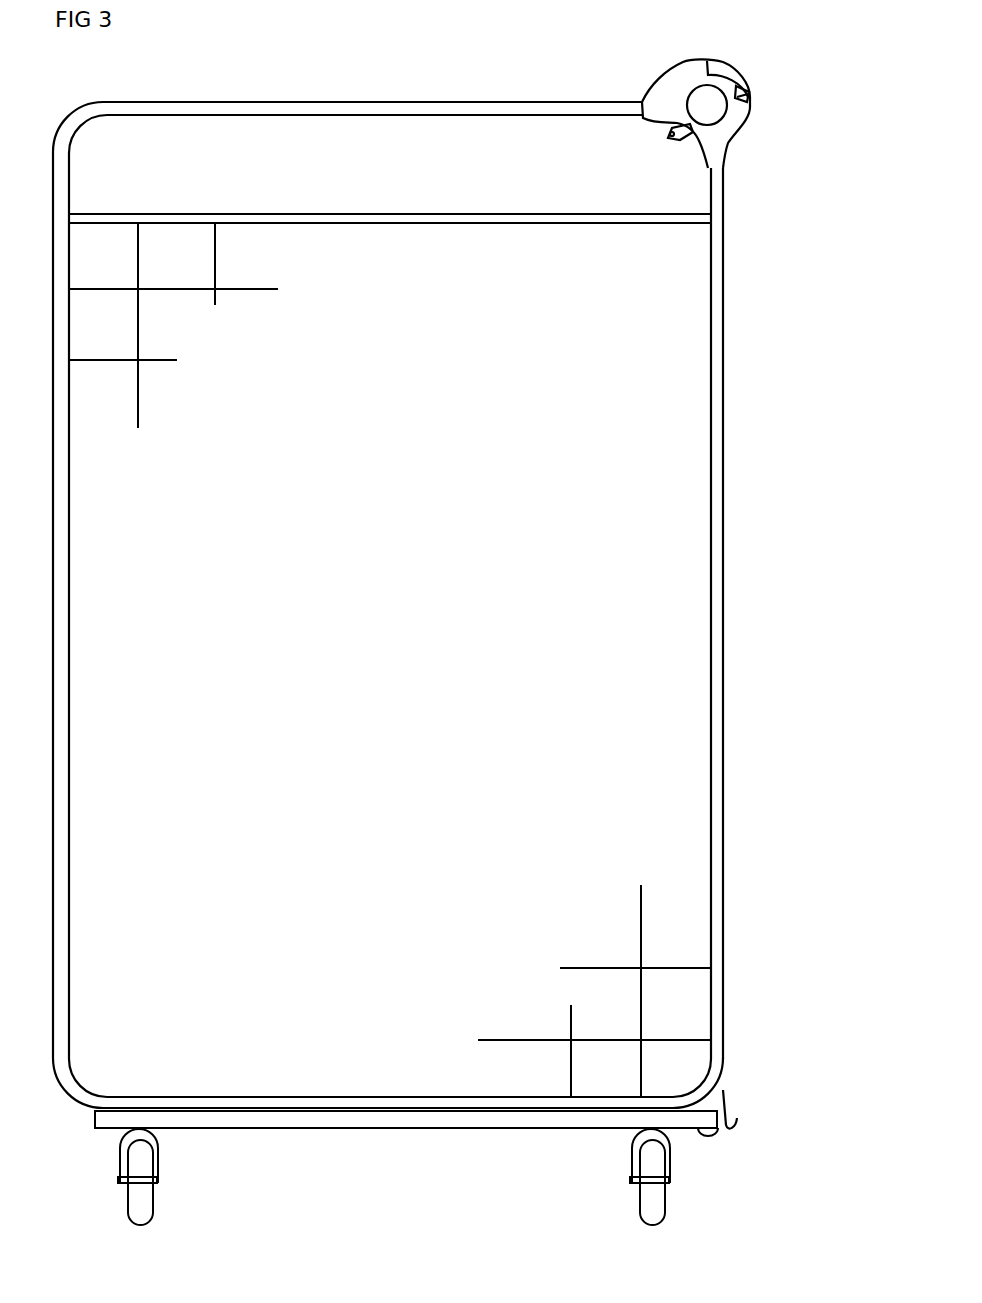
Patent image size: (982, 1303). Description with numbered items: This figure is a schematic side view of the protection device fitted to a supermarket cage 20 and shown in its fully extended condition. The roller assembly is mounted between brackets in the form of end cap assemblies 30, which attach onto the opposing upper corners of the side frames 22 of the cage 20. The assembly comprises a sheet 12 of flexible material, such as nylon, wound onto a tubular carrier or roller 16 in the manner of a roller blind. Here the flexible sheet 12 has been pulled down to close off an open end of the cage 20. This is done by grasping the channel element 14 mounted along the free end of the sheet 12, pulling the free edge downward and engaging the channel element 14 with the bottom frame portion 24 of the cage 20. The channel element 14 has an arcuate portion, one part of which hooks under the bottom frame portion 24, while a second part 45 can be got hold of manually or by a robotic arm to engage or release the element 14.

The sheet of flexible material 12 is at (717, 695).
The channel element 14 is at (710, 1133).
The tubular carrier (roller) 16 is at (715, 117).
The supermarket cage 20 is at (55, 184).
The side frames 22 is at (718, 328).
The bottom frame portion 24 is at (438, 1130).
The end cap assemblies 30 is at (701, 99).
The second part of the arcuate portion 45 is at (730, 1123).